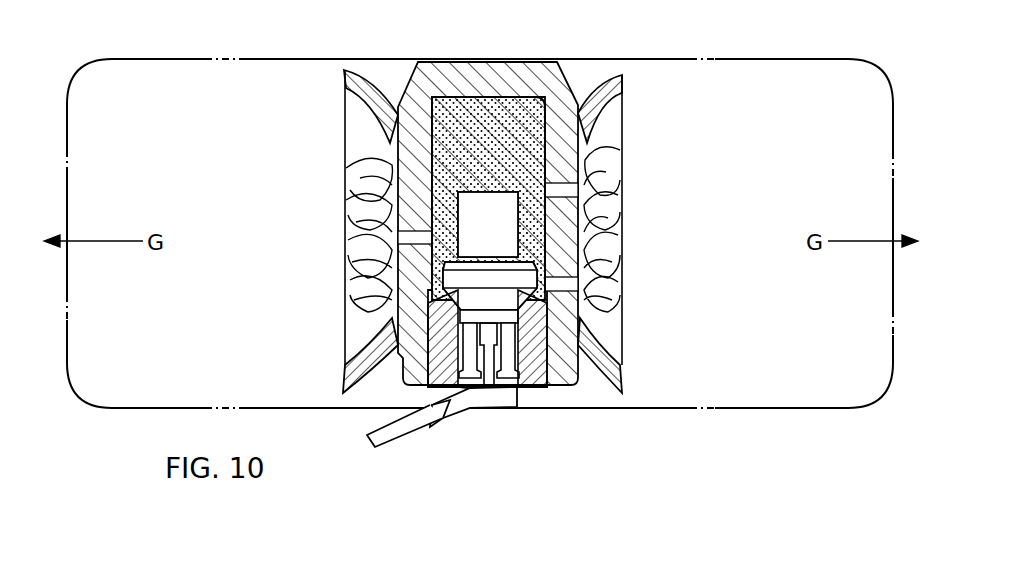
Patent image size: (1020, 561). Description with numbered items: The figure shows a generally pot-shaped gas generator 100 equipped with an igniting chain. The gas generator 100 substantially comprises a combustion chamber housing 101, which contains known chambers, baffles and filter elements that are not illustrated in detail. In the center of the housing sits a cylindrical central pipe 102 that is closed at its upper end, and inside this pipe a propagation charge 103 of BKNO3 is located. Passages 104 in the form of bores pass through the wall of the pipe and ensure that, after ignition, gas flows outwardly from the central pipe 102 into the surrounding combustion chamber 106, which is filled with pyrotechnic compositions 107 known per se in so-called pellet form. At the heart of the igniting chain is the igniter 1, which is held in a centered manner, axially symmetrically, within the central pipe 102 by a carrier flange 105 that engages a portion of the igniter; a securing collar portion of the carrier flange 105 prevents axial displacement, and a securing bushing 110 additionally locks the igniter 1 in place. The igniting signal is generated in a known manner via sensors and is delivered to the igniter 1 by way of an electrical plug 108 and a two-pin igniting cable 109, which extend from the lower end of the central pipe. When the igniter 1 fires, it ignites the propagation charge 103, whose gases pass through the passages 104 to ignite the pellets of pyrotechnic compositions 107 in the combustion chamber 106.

The gas generator 100 is at (744, 60).
The combustion chamber housing 101 is at (265, 76).
The central pipe 102 is at (446, 62).
The propagation charge 103 is at (483, 117).
The igniter 1 is at (496, 233).
The passages 104 is at (405, 238).
The carrier flange 105 is at (540, 392).
The combustion chamber 106 is at (372, 114).
The pyrotechnic compositions 107 is at (352, 216).
The electrical plug 108 is at (481, 405).
The two-pin igniting cable 109 is at (403, 433).
The securing bushing 110 is at (523, 390).